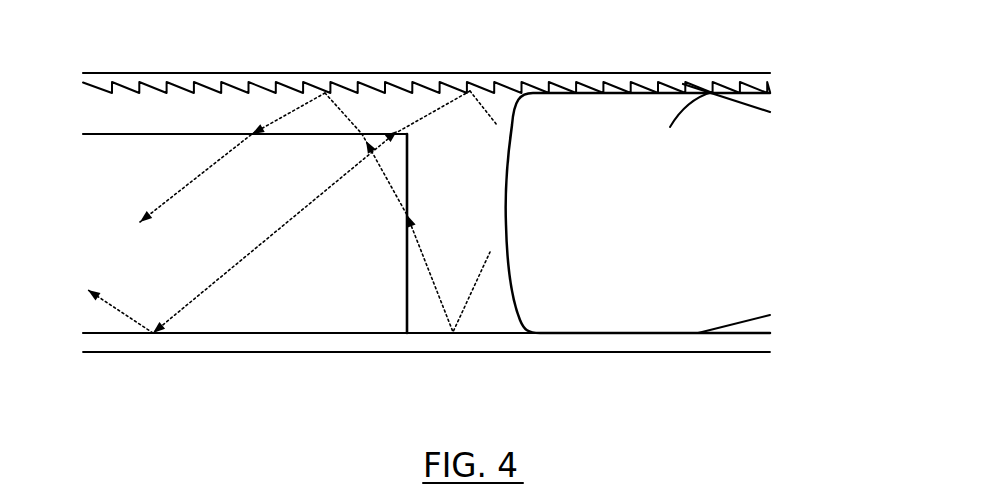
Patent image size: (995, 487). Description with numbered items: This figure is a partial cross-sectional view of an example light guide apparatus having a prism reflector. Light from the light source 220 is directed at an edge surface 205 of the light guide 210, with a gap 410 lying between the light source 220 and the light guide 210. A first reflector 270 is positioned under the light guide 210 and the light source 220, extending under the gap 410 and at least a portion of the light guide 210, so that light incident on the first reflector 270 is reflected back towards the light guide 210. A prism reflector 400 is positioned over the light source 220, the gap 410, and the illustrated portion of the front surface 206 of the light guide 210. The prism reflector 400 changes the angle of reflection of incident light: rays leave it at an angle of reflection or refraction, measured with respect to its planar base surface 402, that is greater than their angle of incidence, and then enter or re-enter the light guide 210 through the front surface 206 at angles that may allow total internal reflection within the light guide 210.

The front surface 206 is at (155, 135).
The planar base surface 402 is at (458, 73).
The prism reflector 400 is at (605, 82).
The light source 220 is at (770, 84).
The first reflector 270 is at (757, 343).
The light guide 210 is at (315, 302).
The edge surface 205 is at (407, 333).
The gap 410 is at (467, 223).